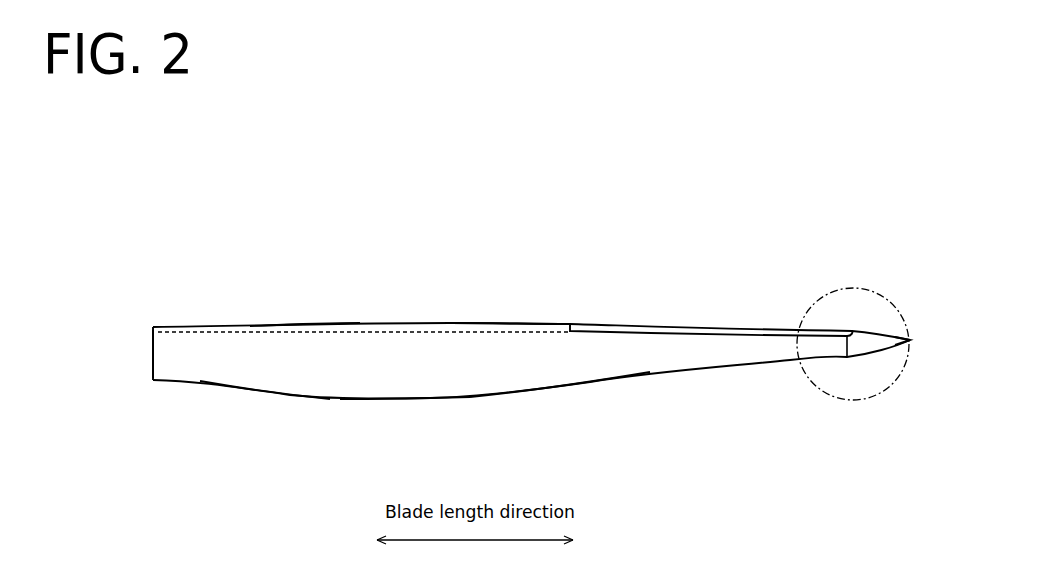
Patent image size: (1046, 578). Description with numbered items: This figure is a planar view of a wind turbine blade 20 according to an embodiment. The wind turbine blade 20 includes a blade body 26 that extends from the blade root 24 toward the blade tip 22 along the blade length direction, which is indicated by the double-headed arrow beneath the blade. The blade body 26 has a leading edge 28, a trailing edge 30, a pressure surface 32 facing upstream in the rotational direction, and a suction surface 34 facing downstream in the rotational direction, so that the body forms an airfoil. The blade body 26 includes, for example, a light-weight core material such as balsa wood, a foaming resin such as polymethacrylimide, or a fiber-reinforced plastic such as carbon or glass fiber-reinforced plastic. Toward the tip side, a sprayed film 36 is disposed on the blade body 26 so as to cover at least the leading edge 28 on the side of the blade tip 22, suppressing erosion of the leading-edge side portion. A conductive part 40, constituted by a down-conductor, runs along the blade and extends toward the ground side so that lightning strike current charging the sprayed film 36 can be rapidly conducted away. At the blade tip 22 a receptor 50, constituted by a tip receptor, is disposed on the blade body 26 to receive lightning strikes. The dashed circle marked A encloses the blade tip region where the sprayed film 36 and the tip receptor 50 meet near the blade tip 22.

The wind turbine blade 20 is at (612, 198).
The blade tip 22 is at (912, 338).
The blade root 24 is at (143, 333).
The blade body 26 is at (495, 398).
The leading edge 28 is at (305, 325).
The trailing edge 30 is at (388, 398).
The pressure surface 32 is at (357, 383).
The suction surface 34 is at (487, 348).
The sprayed film (first sprayed layer) 36 is at (820, 329).
The conductive part (down-conductor) 40 is at (403, 329).
The receptor (tip receptor) 50 is at (867, 347).
The enlarged region A is at (865, 289).